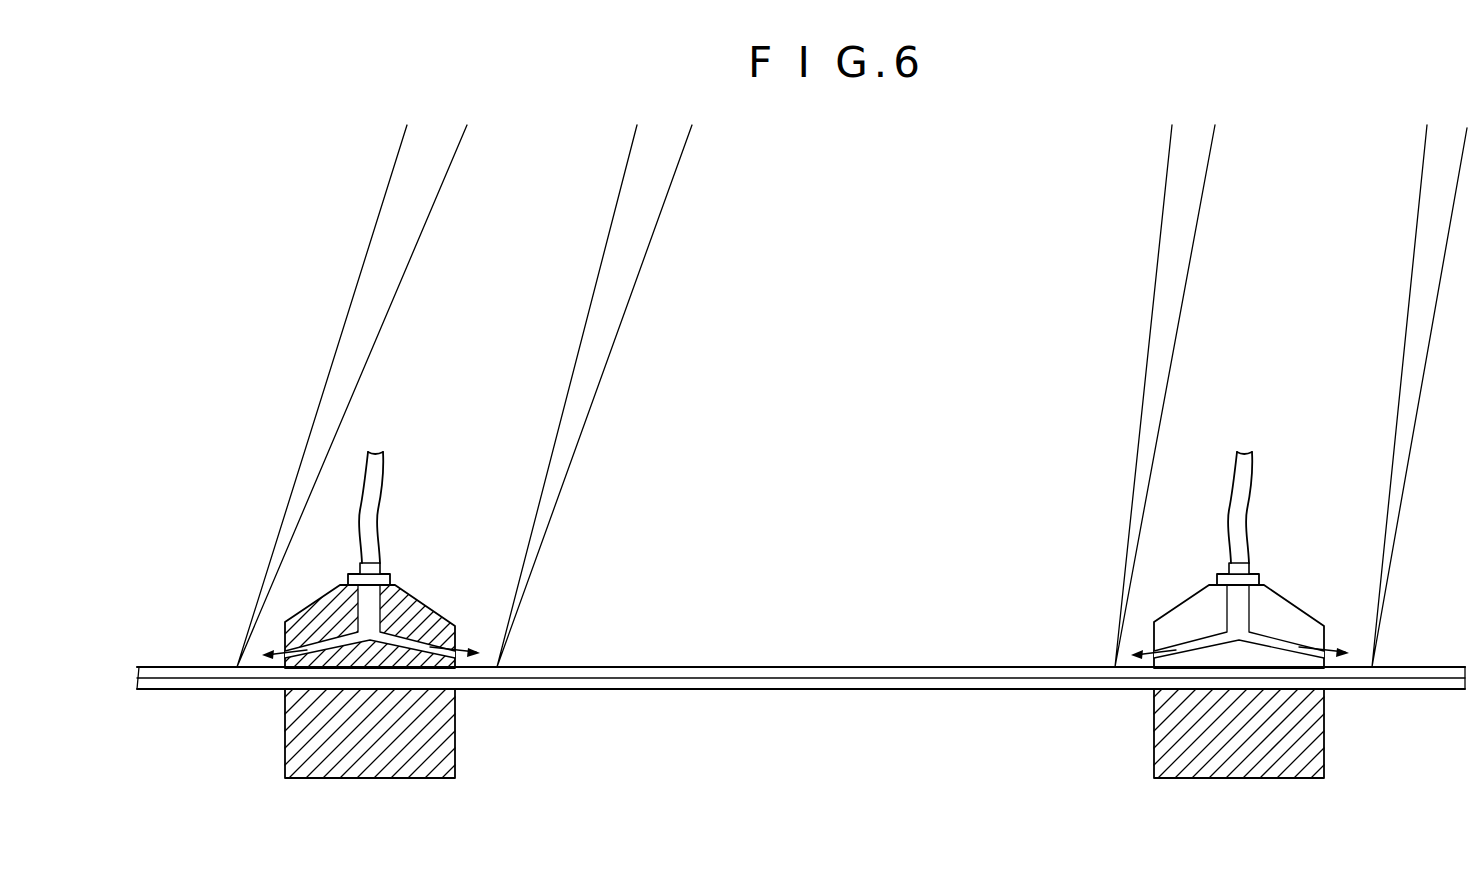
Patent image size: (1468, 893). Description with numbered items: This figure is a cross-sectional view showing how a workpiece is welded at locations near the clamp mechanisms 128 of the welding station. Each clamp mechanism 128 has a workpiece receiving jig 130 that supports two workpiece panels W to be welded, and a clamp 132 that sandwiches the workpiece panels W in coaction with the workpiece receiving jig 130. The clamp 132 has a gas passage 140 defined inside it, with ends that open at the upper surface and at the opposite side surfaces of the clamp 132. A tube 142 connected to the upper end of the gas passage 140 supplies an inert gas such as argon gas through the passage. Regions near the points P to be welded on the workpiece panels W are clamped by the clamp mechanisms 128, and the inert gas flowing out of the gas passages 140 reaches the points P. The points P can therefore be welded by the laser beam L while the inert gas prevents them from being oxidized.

The clamp mechanism 128 is at (268, 735).
The workpiece receiving jig 130 is at (447, 742).
The clamp 132 is at (410, 610).
The gas passage 140 is at (363, 618).
The tube 142 is at (374, 489).
The laser beam L is at (350, 344).
The points to be welded P is at (237, 665).
The workpiece panels W is at (806, 667).